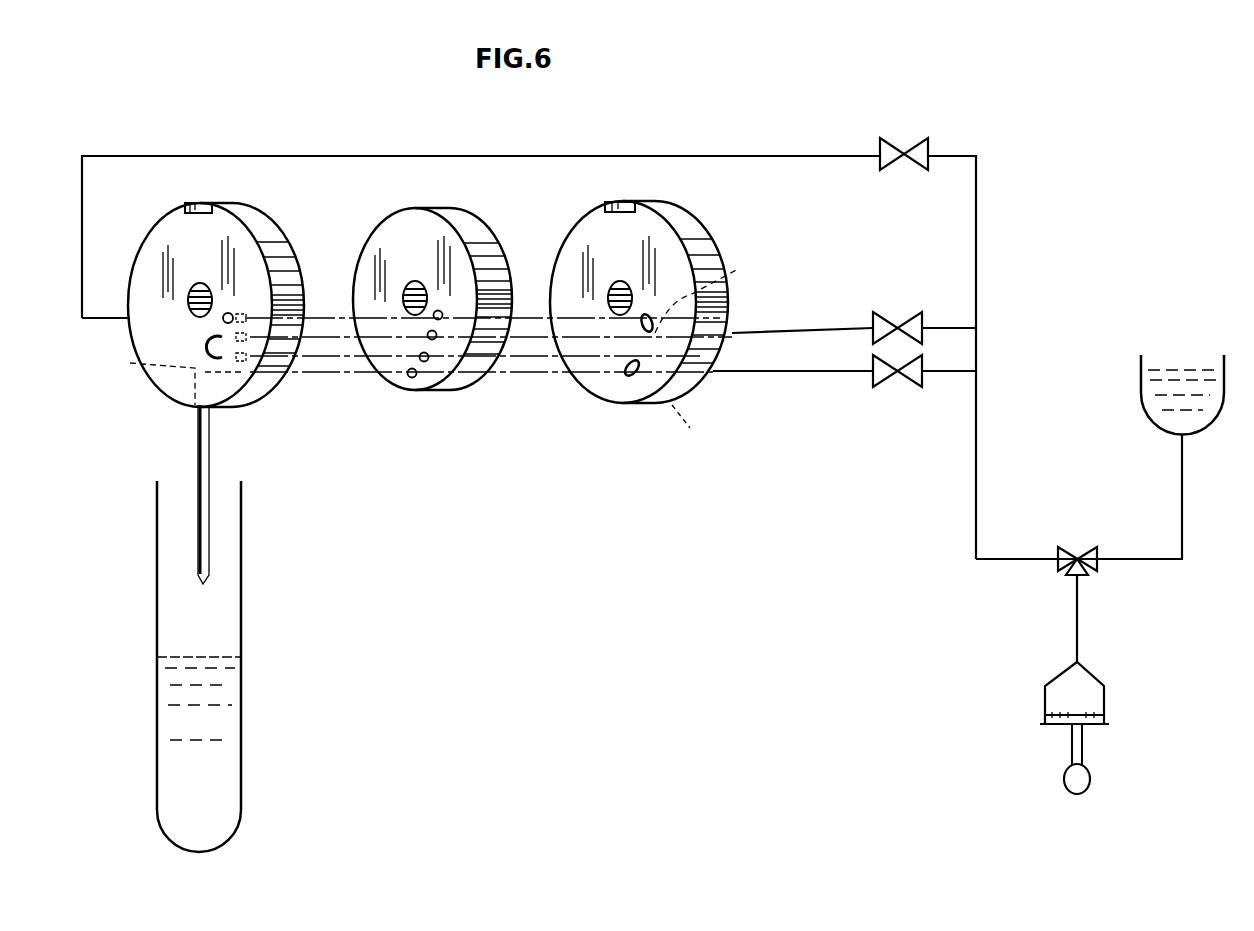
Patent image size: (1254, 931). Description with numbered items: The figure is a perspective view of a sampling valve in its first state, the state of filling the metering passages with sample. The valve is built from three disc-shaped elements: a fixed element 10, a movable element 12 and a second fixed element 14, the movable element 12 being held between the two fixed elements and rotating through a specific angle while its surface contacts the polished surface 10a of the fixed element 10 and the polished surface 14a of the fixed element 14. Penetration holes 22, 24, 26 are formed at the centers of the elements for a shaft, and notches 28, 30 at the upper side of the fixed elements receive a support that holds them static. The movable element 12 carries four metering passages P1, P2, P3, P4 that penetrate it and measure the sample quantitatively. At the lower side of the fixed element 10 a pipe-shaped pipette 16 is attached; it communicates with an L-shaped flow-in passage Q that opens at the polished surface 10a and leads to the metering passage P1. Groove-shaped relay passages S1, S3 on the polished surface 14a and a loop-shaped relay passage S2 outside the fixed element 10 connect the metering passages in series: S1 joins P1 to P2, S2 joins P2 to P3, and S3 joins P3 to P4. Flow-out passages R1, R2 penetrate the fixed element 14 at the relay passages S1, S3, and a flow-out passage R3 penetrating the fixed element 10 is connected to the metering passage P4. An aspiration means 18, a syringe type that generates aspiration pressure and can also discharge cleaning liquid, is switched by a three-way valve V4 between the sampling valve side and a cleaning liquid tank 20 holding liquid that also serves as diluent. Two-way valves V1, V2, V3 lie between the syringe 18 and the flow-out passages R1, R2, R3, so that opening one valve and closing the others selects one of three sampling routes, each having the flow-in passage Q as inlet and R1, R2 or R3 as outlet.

The fixed element 10 is at (152, 385).
The polished surface 10a is at (272, 402).
The movable element 12 is at (385, 375).
The fixed element 14 is at (617, 402).
The polished surface 14a is at (593, 382).
The pipette 16 is at (195, 483).
The aspiration means 18 is at (1038, 665).
The cleaning liquid tank 20 is at (1141, 393).
The penetration hole 22 is at (193, 292).
The penetration hole 24 is at (410, 290).
The penetration hole 26 is at (615, 292).
The notch 28 is at (197, 203).
The notch 30 is at (615, 202).
The metering passage P1 is at (413, 378).
The metering passage P2 is at (427, 361).
The metering passage P3 is at (436, 338).
The metering passage P4 is at (442, 318).
The flow-out passage R1 is at (702, 429).
The flow-out passage R2 is at (722, 290).
The flow-out passage R3 is at (230, 312).
The relay passage S1 is at (640, 368).
The relay passage S2 is at (205, 346).
The relay passage S3 is at (650, 318).
The two-way valve V1 is at (880, 386).
The two-way valve V2 is at (880, 314).
The two-way valve V3 is at (885, 172).
The three-way valve V4 is at (1082, 548).
The flow-in passage Q is at (172, 377).